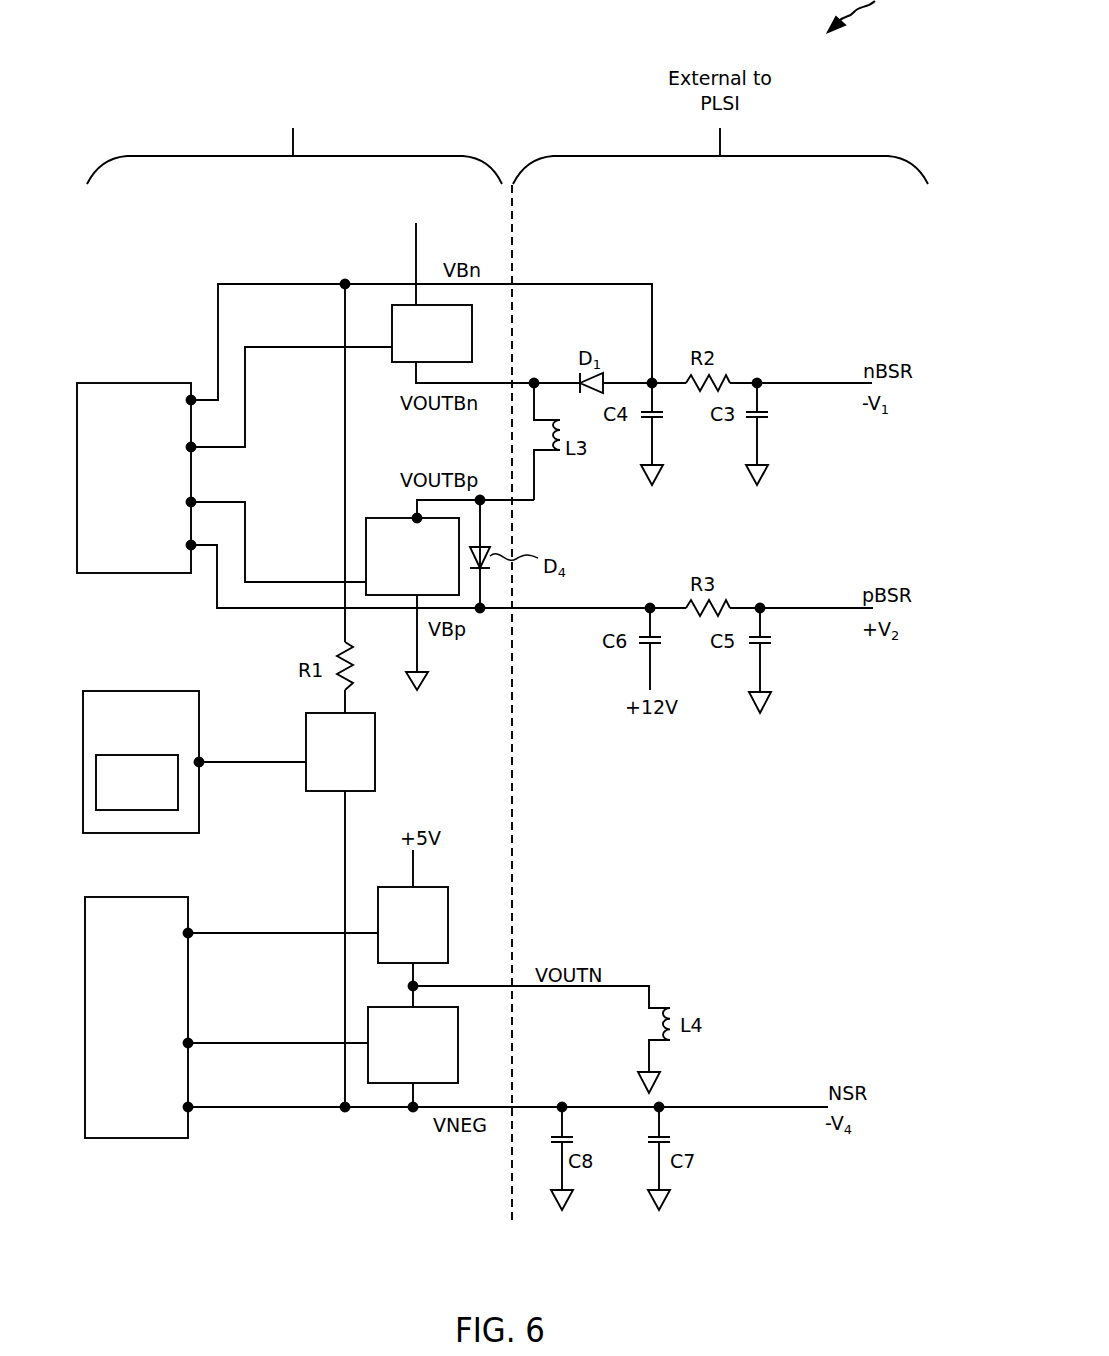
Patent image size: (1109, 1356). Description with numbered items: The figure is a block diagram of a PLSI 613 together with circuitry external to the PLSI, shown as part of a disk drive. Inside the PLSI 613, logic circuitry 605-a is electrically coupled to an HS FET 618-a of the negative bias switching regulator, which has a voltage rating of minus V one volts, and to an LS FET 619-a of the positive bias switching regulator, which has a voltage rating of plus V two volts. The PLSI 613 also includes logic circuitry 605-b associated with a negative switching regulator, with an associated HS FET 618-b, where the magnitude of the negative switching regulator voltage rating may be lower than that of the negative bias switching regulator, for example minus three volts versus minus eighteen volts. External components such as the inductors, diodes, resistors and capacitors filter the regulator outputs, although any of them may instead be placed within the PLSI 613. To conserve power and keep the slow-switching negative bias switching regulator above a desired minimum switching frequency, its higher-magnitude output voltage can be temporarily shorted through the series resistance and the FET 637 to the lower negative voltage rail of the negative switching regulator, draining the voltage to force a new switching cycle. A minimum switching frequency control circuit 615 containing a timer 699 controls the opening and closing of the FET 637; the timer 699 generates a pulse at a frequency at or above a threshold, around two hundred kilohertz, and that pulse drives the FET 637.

The PLSI 613 is at (294, 131).
The logic circuitry 605-a is at (134, 478).
The logic circuitry 605-b is at (136, 1017).
The HS FET 618-a is at (432, 333).
The HS FET 618-b is at (413, 925).
The LS FET 619-a is at (412, 800).
The minimum switching frequency control circuit 615 is at (141, 762).
The timer 699 is at (137, 782).
The FET 637 is at (340, 752).